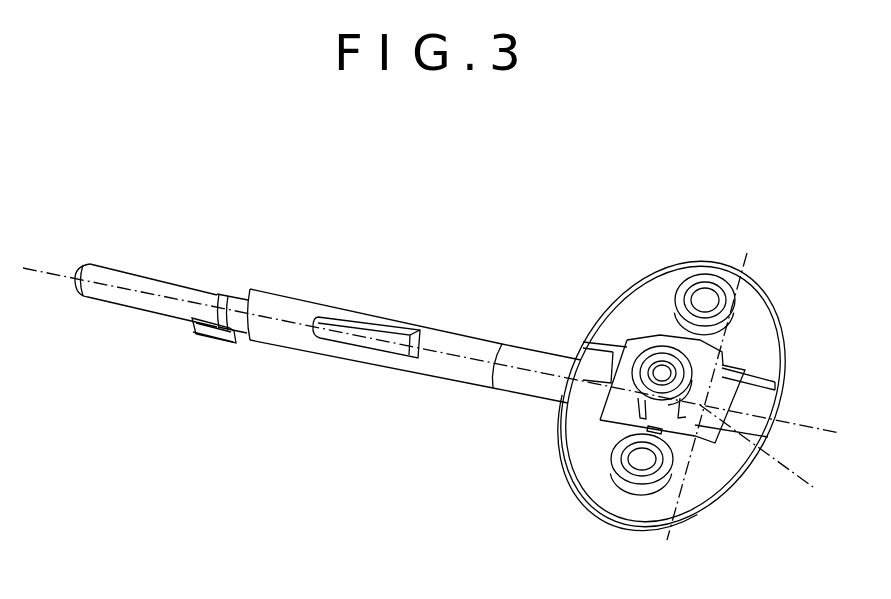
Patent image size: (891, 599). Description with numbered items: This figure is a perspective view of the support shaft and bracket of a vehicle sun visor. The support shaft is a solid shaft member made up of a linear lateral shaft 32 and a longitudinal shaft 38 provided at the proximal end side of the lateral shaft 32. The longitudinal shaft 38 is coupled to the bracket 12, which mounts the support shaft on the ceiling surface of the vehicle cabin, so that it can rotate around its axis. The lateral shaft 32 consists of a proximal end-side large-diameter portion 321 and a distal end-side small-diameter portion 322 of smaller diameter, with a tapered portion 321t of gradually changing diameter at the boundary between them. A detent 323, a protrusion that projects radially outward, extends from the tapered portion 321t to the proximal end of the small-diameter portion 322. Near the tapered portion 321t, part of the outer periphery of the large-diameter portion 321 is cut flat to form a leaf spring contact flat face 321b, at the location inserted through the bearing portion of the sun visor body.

The bracket 12 is at (757, 340).
The lateral shaft 32 is at (533, 380).
The large-diameter portion 321 is at (430, 369).
The leaf spring contact flat face 321b is at (367, 330).
The tapered portion 321t is at (250, 293).
The small-diameter portion 322 is at (127, 278).
The detent 323 is at (207, 337).
The longitudinal shaft 38 is at (652, 350).